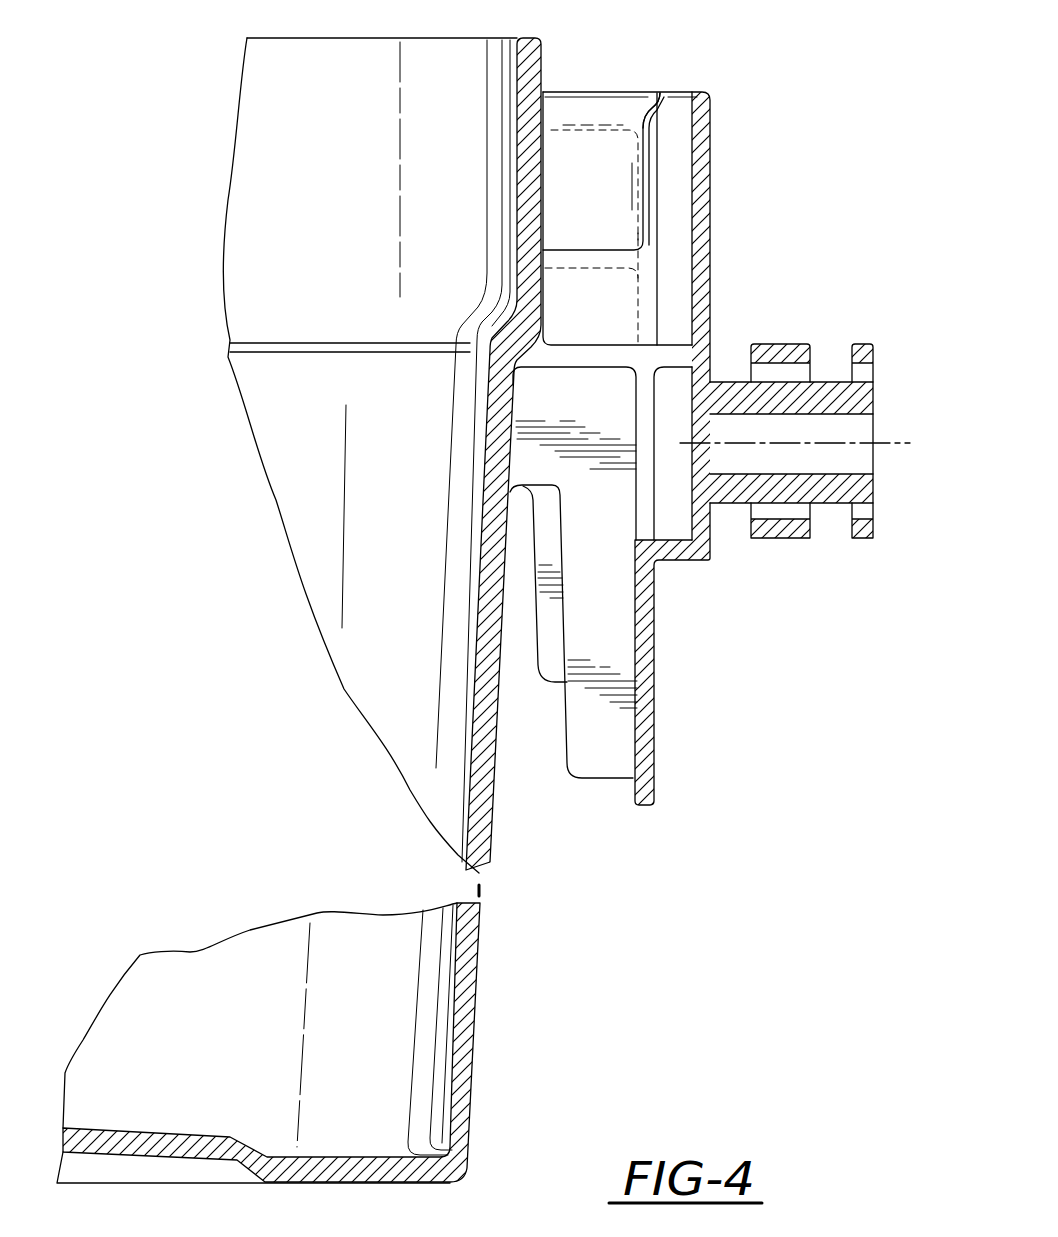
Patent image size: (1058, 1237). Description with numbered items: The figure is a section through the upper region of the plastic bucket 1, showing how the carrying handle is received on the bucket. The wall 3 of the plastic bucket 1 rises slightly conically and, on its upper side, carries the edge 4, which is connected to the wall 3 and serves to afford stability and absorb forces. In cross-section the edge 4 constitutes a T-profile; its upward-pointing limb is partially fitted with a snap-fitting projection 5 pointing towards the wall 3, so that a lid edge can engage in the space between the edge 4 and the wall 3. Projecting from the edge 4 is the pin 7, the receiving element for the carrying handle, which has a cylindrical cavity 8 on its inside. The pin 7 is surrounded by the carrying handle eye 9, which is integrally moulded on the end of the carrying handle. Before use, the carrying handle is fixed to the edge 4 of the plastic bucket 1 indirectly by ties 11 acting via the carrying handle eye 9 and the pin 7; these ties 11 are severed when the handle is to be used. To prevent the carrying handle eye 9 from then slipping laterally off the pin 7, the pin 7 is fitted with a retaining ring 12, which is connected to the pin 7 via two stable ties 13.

The plastic bucket 1 is at (770, 620).
The wall 3 is at (400, 586).
The edge 4 is at (640, 253).
The snap-fitting projection 5 is at (647, 117).
The pin 7 is at (857, 490).
The cylindrical cavity 8 is at (812, 471).
The carrying handle eye 9 is at (768, 346).
The ties 11 is at (808, 372).
The retaining ring 12 is at (857, 344).
The stable ties 13 is at (875, 372).